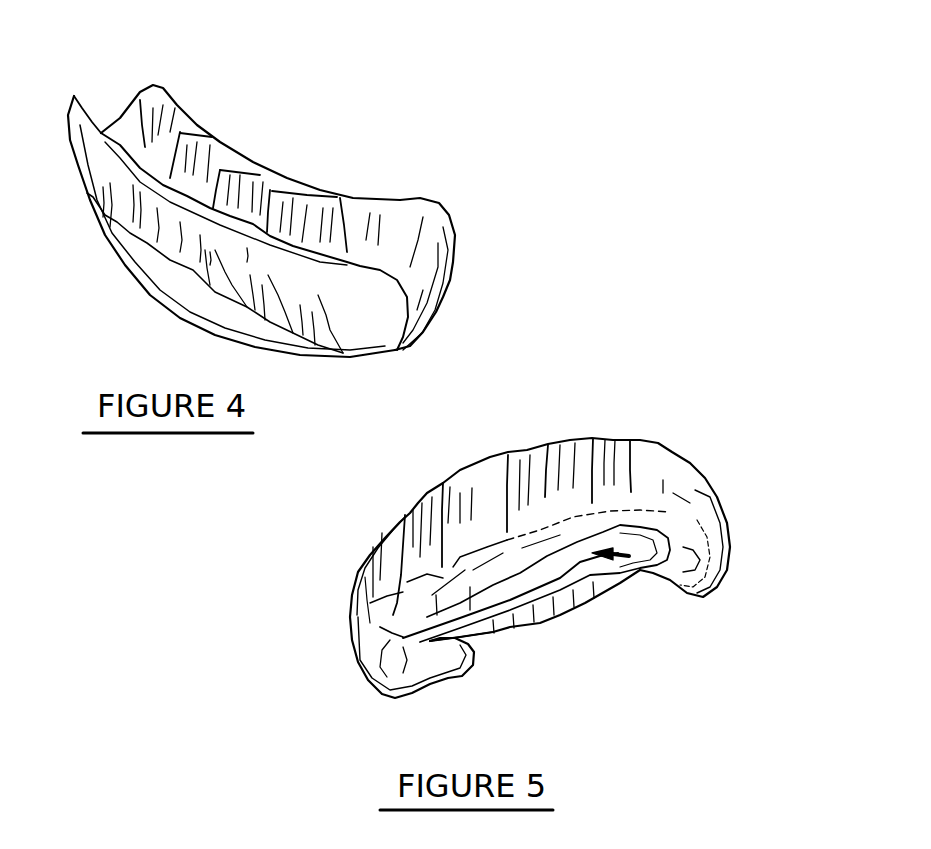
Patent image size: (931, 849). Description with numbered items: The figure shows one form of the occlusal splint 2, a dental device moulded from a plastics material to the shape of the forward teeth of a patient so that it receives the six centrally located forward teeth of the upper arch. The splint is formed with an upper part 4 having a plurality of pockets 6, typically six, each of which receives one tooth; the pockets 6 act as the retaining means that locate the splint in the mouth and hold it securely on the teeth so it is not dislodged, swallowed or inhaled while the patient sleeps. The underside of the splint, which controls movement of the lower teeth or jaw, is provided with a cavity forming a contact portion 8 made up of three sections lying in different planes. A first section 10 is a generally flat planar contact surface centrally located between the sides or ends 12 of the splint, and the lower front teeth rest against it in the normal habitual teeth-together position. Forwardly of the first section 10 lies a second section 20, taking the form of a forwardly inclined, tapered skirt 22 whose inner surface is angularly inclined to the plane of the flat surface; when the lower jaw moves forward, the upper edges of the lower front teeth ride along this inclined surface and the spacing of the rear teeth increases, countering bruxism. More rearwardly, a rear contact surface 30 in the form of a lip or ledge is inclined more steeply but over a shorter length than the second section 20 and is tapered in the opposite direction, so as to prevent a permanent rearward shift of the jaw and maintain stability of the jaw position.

In FIG. 4, the occlusal splint 2 is at (458, 285).
In FIG. 5, the occlusal splint 2 is at (757, 557).
In FIG. 4, the upper part 4 is at (267, 155).
In FIG. 4, the pockets 6 is at (147, 140).
In FIG. 5, the contact portion 8 is at (567, 630).
In FIG. 5, the first section 10 is at (610, 567).
In FIG. 5, the sides or ends 12 is at (407, 668).
In FIG. 5, the second section 20 is at (625, 577).
In FIG. 4, the skirt 22 is at (183, 297).
In FIG. 5, the skirt 22 is at (527, 553).
In FIG. 5, the rear contact surface 30 is at (523, 620).